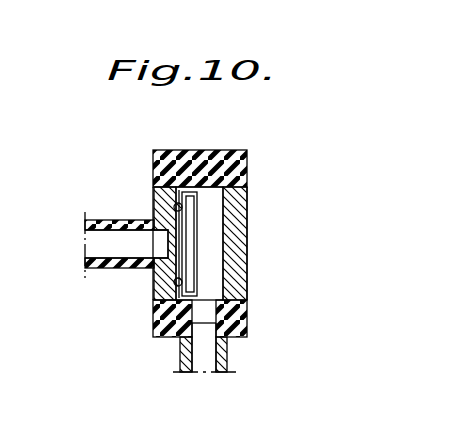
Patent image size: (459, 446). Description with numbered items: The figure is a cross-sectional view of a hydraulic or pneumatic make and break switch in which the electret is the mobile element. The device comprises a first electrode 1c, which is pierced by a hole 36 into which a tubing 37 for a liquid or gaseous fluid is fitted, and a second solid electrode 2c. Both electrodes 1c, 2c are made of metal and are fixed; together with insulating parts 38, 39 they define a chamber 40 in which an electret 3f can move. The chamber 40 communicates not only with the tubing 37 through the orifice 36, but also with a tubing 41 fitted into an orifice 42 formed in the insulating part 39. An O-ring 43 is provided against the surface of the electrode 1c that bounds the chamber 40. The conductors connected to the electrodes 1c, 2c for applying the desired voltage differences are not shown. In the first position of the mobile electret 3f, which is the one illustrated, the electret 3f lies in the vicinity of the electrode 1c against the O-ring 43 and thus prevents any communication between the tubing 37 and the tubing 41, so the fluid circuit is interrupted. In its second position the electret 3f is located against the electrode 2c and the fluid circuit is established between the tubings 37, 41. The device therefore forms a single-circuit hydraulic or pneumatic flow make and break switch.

The insulating part 38 is at (213, 157).
The second electrode 2c is at (238, 201).
The first electrode 1c is at (158, 211).
The chamber 40 is at (208, 252).
The electret 3f is at (192, 223).
The O-ring 43 is at (175, 205).
The tubing 37 is at (95, 223).
The hole 36 is at (172, 247).
The orifice 42 is at (198, 312).
The insulating part 39 is at (242, 312).
The tubing 41 is at (227, 355).